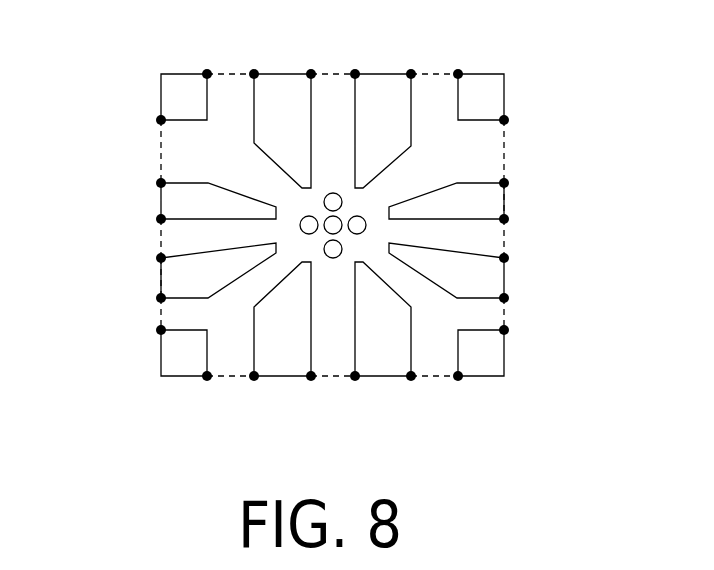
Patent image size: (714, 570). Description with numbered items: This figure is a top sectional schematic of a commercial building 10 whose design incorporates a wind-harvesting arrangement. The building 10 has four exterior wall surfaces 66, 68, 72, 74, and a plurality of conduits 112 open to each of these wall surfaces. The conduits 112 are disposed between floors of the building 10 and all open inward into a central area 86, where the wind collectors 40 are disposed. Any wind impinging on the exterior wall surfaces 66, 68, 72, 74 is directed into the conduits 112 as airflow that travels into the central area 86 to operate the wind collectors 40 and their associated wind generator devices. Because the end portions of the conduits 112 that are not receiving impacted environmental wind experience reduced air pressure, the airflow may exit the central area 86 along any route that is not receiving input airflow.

The building 10 is at (168, 71).
The exterior wall surface 68 is at (283, 73).
The central area 86 is at (312, 190).
The conduits 112 is at (333, 110).
The exterior wall surface 72 is at (505, 198).
The exterior wall surface 74 is at (160, 278).
The exterior wall surface 66 is at (280, 377).
The wind collectors 40 is at (335, 258).